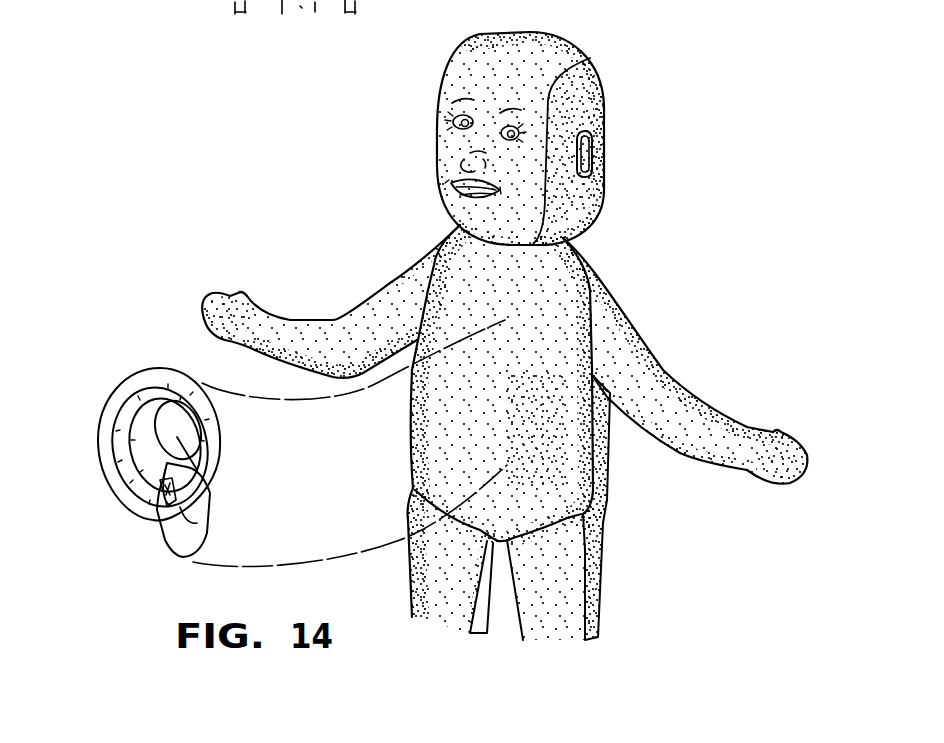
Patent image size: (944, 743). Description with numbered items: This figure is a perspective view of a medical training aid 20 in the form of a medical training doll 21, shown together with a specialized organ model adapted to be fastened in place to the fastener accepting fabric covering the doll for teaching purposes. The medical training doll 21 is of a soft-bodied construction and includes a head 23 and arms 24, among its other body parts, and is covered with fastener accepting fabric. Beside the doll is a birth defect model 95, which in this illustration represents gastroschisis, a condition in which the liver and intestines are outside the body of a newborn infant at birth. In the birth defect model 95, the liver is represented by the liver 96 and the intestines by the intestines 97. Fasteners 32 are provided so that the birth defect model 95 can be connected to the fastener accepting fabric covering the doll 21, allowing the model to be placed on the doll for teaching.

The medical training aid 20 is at (330, 172).
The medical training doll 21 is at (613, 520).
The head 23 is at (498, 33).
The arms 24 is at (282, 318).
The fasteners 32 is at (167, 505).
The birth defect model 95 is at (98, 390).
The liver 96 is at (183, 550).
The intestines 97 is at (108, 463).